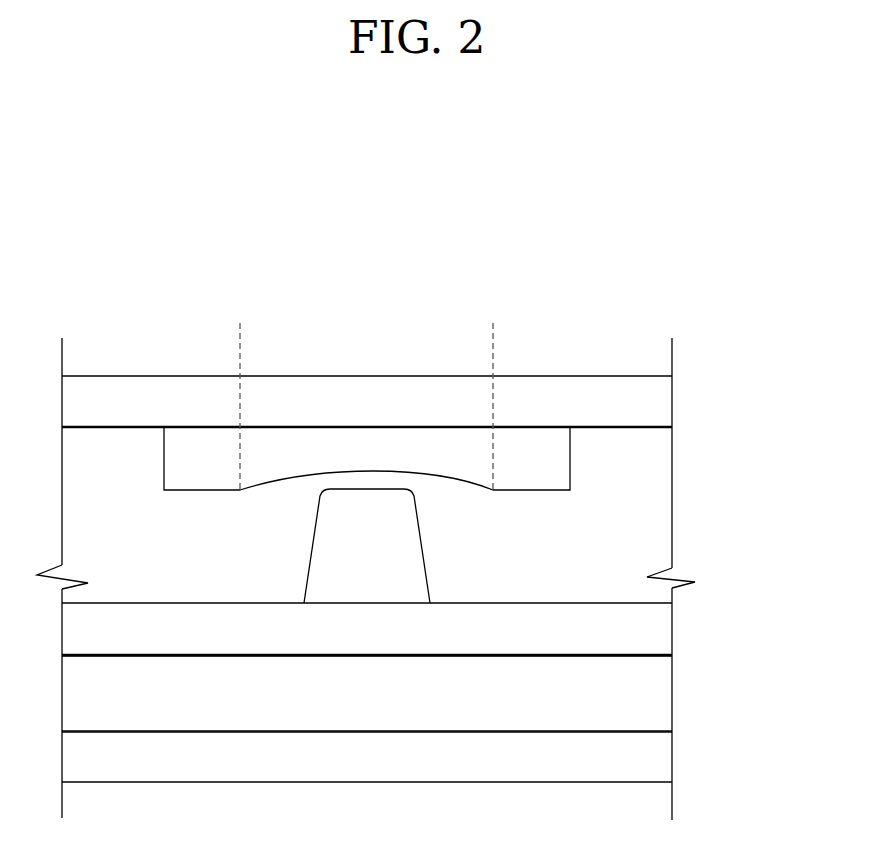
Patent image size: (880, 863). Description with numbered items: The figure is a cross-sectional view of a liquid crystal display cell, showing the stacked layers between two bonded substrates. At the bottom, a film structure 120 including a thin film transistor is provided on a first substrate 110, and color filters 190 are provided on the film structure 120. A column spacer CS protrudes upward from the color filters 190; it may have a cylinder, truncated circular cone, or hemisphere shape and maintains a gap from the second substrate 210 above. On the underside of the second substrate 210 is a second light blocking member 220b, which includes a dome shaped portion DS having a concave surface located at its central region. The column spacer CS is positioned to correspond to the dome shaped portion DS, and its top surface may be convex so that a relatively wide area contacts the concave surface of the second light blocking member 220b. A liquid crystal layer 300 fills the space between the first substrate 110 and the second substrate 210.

The second substrate 210 is at (658, 400).
The second light blocking member 220b is at (553, 457).
The liquid crystal layer 300 is at (657, 525).
The column spacer CS is at (410, 553).
The color filters 190 is at (657, 628).
The film structure 120 is at (657, 692).
The first substrate 110 is at (657, 757).
The dome shaped portion DS is at (492, 338).